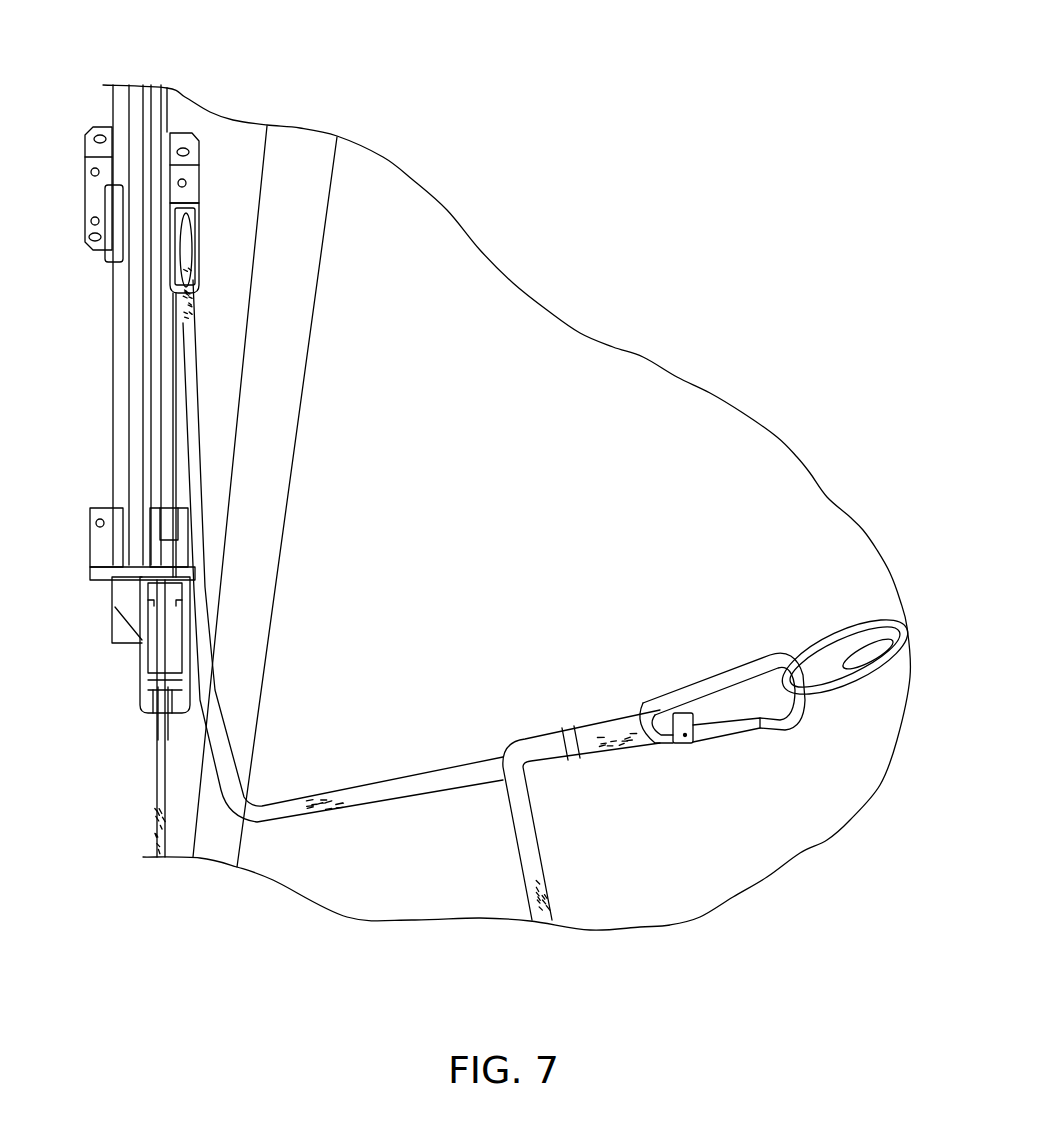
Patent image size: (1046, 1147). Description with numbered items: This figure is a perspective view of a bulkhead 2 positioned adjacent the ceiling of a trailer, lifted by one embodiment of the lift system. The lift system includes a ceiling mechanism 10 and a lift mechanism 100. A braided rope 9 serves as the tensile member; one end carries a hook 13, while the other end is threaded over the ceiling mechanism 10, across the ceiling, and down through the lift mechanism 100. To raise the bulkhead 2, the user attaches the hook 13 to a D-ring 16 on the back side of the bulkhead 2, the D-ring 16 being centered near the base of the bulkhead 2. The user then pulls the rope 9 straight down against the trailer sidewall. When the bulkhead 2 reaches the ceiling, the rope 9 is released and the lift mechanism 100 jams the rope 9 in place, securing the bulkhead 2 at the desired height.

The bulkhead 2 is at (592, 425).
The ceiling mechanism 10 is at (200, 125).
The lift mechanism 100 is at (128, 684).
The braided rope 9 is at (293, 813).
The hook 13 is at (777, 730).
The D-ring 16 is at (843, 620).